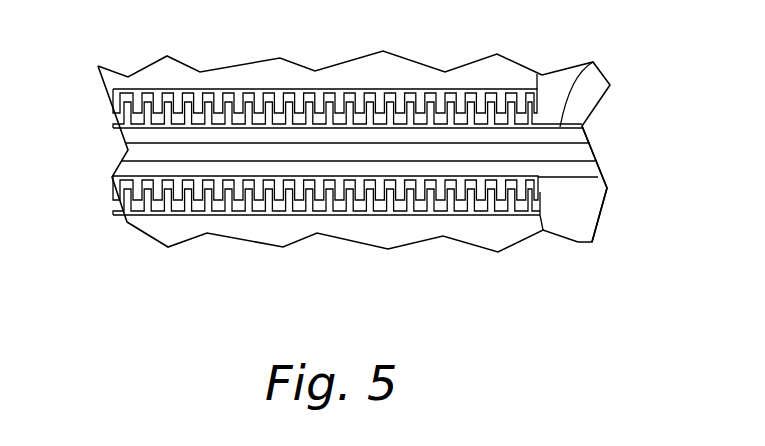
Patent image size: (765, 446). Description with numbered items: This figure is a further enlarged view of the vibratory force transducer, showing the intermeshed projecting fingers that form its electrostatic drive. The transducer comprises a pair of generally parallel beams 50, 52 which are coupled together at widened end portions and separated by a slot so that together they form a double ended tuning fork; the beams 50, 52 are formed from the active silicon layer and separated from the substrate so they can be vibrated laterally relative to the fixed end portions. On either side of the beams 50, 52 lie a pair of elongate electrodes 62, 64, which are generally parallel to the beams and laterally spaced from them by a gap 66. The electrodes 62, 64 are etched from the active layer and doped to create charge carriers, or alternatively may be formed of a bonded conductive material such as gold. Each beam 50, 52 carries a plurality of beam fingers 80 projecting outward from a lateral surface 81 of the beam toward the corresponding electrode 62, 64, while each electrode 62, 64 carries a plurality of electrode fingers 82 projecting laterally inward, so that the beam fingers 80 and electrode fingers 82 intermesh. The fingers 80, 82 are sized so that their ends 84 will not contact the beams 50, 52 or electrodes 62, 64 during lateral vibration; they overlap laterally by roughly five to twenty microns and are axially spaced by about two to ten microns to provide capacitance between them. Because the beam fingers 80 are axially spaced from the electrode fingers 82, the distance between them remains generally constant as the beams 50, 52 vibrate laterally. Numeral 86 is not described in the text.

The beam 50 is at (570, 133).
The beam 52 is at (598, 163).
The electrode 62 is at (477, 61).
The electrode 64 is at (220, 228).
The gap 66 is at (560, 115).
The beam finger 80 is at (142, 117).
The lateral surface 81 is at (565, 178).
The electrode finger 82 is at (132, 100).
The finger end 84 is at (138, 187).
The fourth electrode 86 is at (127, 208).